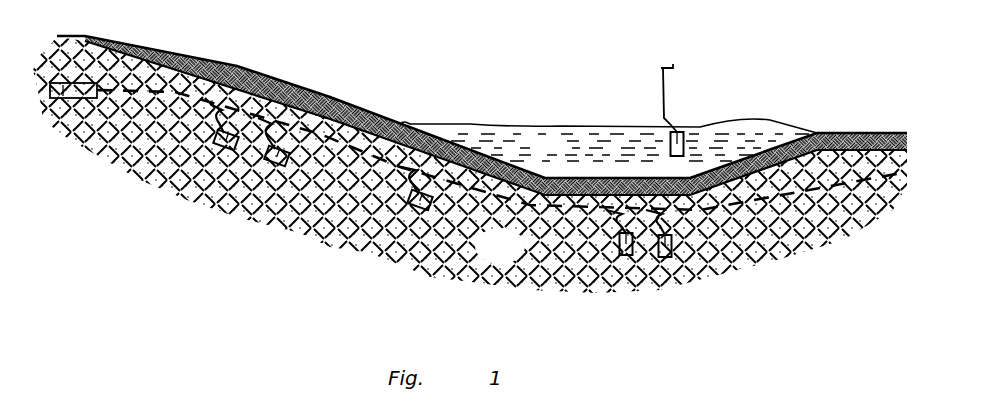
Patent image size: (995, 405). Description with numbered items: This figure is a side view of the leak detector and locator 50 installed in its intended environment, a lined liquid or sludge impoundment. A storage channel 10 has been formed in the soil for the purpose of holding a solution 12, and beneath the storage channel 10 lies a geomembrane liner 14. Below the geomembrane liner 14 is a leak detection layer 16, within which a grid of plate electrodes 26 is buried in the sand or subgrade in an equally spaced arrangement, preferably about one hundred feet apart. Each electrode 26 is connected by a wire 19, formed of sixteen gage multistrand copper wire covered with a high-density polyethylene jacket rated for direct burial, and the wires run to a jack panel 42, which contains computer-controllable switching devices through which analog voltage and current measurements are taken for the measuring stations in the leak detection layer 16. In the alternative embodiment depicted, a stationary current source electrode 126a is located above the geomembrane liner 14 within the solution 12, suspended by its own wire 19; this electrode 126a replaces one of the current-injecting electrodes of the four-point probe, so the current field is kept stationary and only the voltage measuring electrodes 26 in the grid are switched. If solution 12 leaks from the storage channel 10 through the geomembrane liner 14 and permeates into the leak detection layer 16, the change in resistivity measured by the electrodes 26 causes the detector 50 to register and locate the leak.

The storage channel 10 is at (617, 133).
The solution 12 is at (630, 147).
The geomembrane liner 14 is at (237, 66).
The leak detection layer 16 is at (514, 259).
The wire 19 is at (661, 70).
The electrode 26 is at (272, 166).
The jack panel 42 is at (65, 98).
The leak detector and locator 50 is at (468, 94).
The current source electrode 126a is at (680, 131).